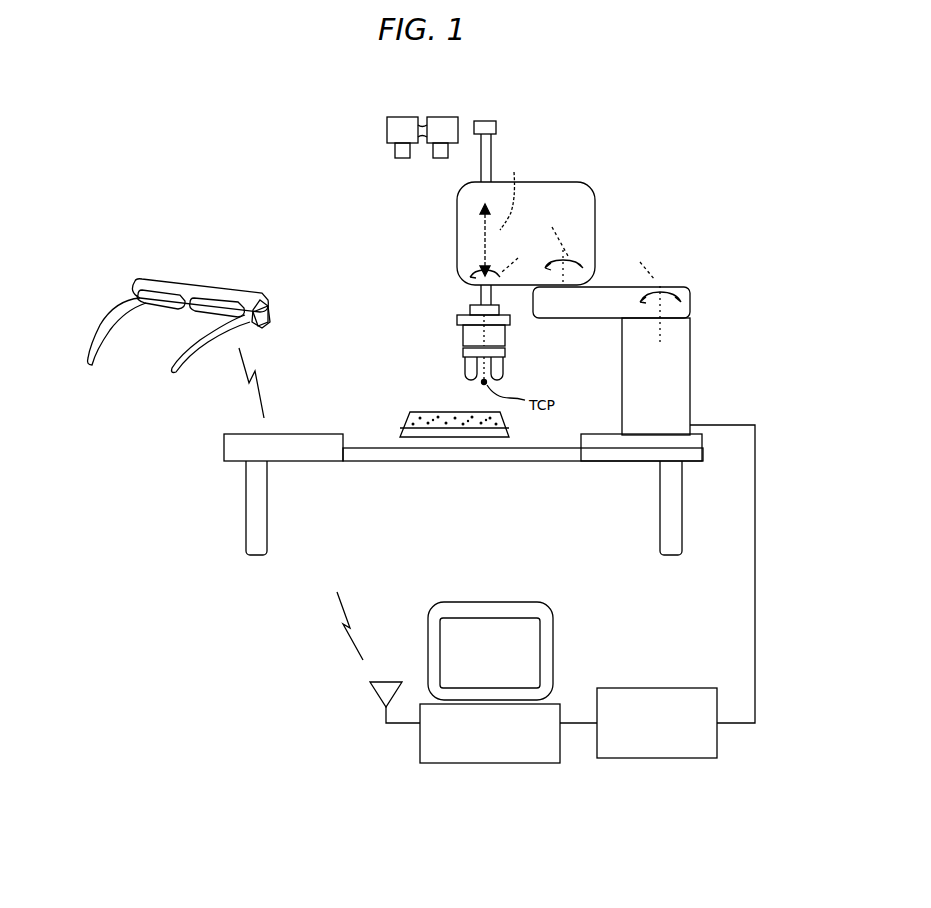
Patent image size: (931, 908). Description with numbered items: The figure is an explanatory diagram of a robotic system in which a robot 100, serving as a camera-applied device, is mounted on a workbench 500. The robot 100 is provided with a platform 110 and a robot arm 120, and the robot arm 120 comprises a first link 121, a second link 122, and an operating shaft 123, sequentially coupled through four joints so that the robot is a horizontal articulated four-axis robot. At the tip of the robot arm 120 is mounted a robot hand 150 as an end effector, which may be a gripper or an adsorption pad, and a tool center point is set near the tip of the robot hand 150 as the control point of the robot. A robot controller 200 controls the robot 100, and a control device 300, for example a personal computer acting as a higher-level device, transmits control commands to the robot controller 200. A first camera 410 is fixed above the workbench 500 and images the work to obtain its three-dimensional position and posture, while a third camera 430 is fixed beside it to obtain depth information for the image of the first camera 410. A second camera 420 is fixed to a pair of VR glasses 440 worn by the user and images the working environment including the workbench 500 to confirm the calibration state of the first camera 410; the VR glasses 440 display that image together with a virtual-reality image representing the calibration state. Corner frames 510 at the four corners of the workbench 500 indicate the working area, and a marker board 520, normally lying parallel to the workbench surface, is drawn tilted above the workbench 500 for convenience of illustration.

The robot 100 is at (751, 142).
The platform 110 is at (691, 380).
The robot arm 120 is at (733, 240).
The first link 121 is at (676, 286).
The second link 122 is at (595, 222).
The operating shaft 123 is at (497, 126).
The robot hand 150 is at (506, 357).
The robot controller 200 is at (640, 688).
The control device 300 is at (462, 602).
The first camera 410 is at (443, 116).
The third camera 430 is at (401, 116).
The second camera 420 is at (262, 324).
The pair of VR glasses 440 is at (118, 300).
The workbench 500 is at (437, 465).
The corner frames 510 is at (318, 445).
The marker board 520 is at (403, 420).